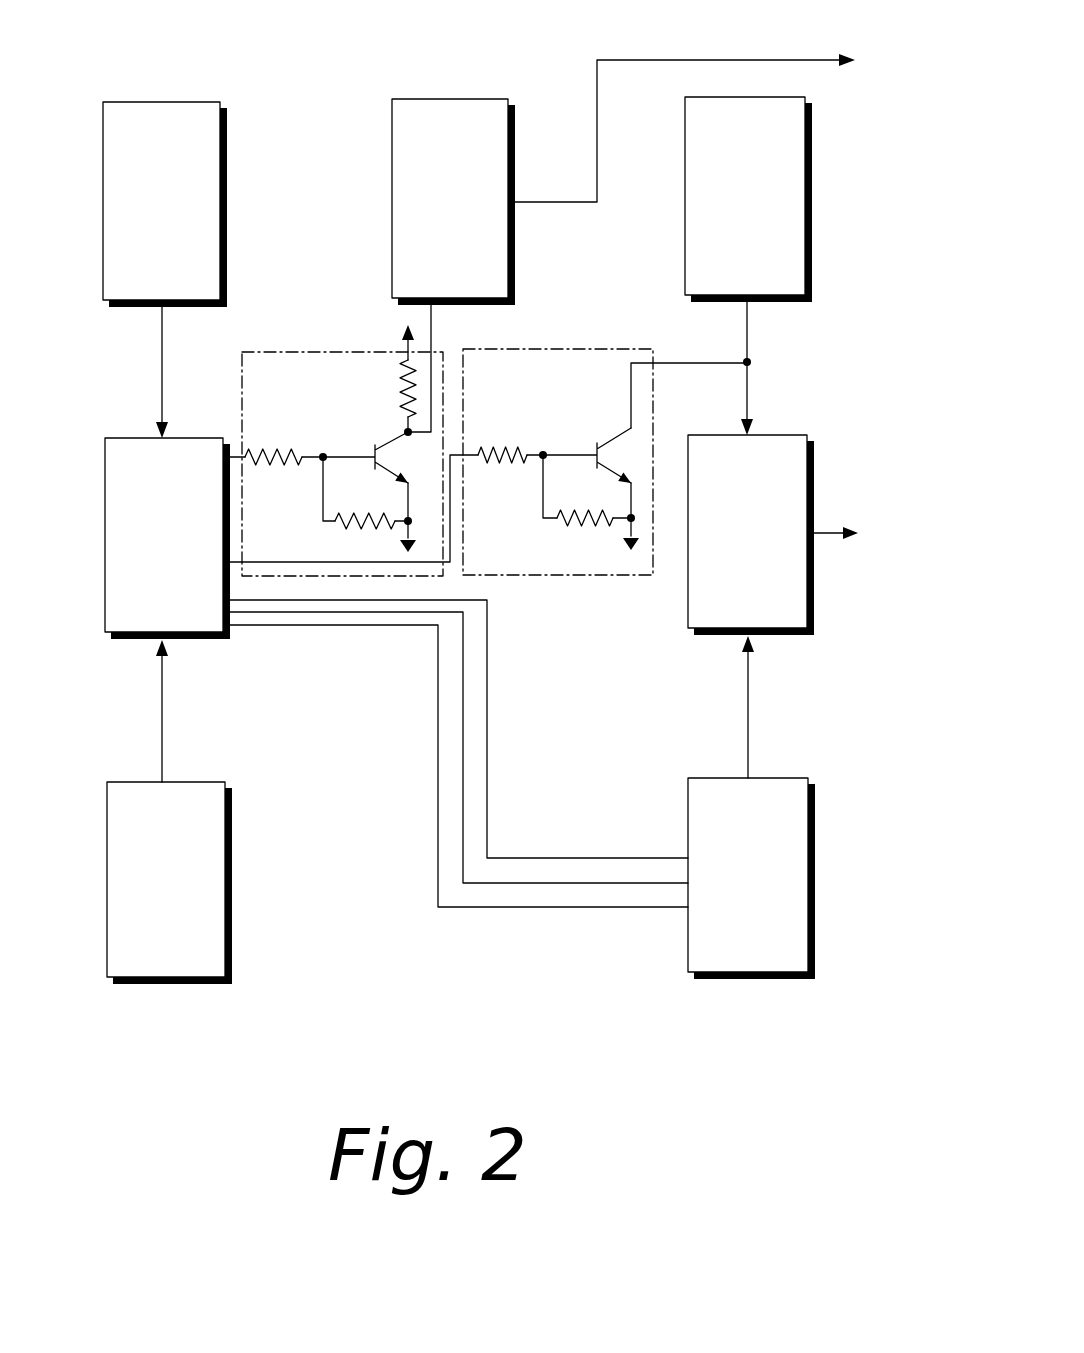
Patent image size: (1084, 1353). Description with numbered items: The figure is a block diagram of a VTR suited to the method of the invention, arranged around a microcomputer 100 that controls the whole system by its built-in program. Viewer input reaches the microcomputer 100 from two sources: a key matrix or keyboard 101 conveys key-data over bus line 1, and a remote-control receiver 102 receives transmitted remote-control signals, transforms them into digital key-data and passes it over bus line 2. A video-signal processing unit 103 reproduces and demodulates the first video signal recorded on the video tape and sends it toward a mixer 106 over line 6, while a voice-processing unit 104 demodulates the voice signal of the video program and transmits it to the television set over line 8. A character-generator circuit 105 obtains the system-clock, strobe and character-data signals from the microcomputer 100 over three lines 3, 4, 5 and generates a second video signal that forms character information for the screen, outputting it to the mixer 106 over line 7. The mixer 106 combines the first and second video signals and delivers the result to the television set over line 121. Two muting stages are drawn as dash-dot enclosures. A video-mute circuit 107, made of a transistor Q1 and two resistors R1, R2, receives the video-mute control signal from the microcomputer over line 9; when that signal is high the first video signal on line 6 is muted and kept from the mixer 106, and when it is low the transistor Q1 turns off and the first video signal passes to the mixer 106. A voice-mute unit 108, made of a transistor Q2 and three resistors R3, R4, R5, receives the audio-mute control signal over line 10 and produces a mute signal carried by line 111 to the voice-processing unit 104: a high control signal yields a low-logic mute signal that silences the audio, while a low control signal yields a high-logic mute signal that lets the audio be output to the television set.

The bus line 1 is at (160, 355).
The bus line 2 is at (162, 718).
The line 3 is at (487, 730).
The line 4 is at (508, 883).
The line 5 is at (437, 780).
The line 6 is at (745, 342).
The line 7 is at (747, 693).
The line 8 is at (700, 60).
The line 9 is at (300, 565).
The line 10 is at (233, 455).
The microcomputer 100 is at (140, 437).
The key matrix 101 is at (182, 102).
The remote-control receiver 102 is at (136, 782).
The video-signal processing unit 103 is at (812, 212).
The voice-processing unit 104 is at (448, 99).
The character-generator circuit 105 is at (768, 778).
The mixer 106 is at (772, 432).
The video-mute circuit 107 is at (605, 429).
The voice-mute unit 108 is at (342, 430).
The audio signal line 111 is at (433, 333).
The line 121 is at (825, 535).
The resistor R1 is at (510, 438).
The resistor R2 is at (587, 508).
The resistor R3 is at (284, 440).
The resistor R4 is at (365, 509).
The resistor R5 is at (389, 378).
The transistor Q1 is at (600, 455).
The transistor Q2 is at (379, 457).